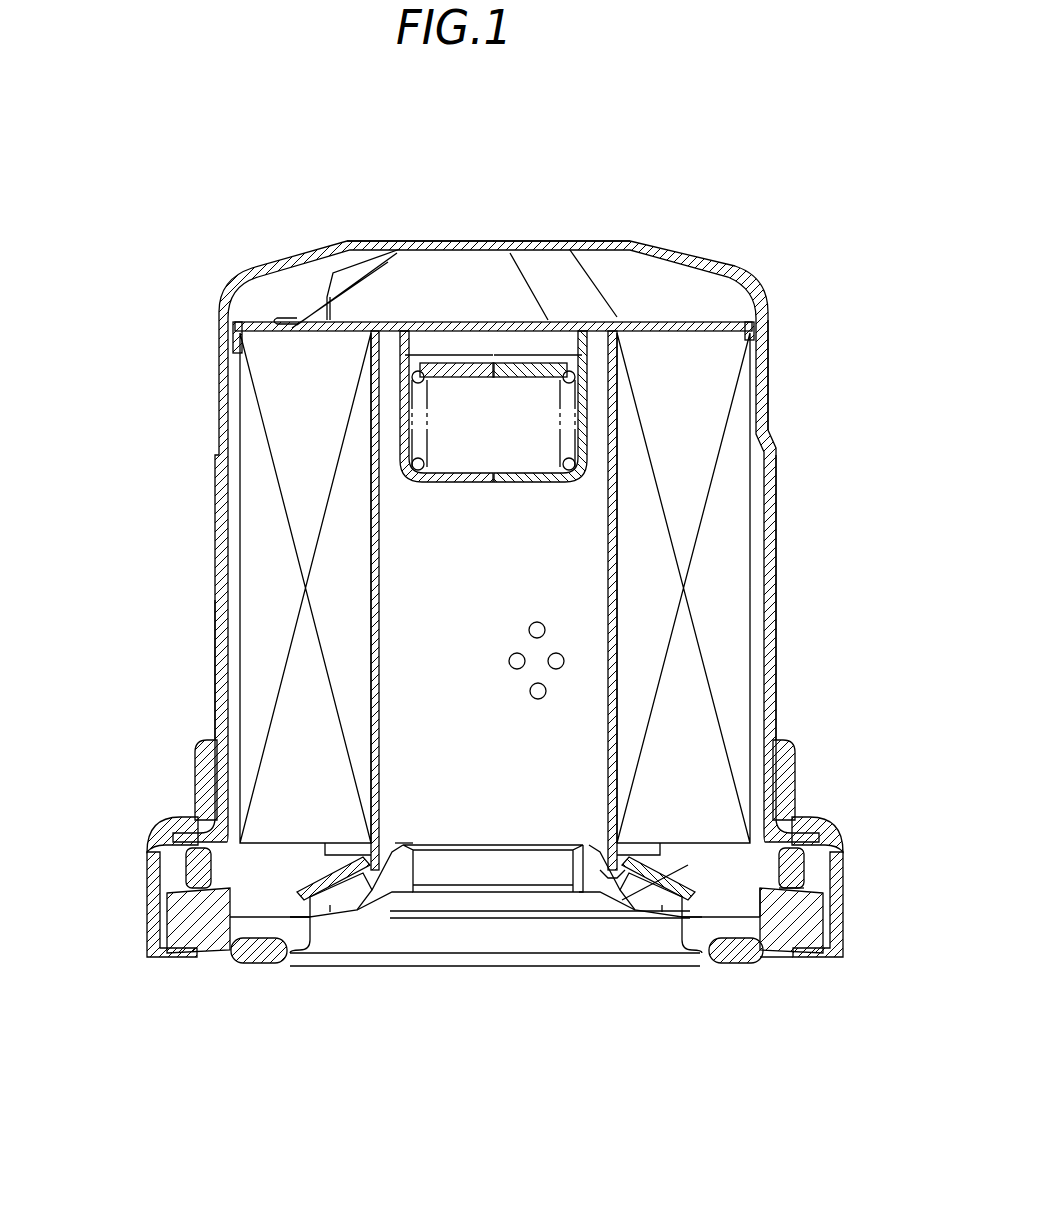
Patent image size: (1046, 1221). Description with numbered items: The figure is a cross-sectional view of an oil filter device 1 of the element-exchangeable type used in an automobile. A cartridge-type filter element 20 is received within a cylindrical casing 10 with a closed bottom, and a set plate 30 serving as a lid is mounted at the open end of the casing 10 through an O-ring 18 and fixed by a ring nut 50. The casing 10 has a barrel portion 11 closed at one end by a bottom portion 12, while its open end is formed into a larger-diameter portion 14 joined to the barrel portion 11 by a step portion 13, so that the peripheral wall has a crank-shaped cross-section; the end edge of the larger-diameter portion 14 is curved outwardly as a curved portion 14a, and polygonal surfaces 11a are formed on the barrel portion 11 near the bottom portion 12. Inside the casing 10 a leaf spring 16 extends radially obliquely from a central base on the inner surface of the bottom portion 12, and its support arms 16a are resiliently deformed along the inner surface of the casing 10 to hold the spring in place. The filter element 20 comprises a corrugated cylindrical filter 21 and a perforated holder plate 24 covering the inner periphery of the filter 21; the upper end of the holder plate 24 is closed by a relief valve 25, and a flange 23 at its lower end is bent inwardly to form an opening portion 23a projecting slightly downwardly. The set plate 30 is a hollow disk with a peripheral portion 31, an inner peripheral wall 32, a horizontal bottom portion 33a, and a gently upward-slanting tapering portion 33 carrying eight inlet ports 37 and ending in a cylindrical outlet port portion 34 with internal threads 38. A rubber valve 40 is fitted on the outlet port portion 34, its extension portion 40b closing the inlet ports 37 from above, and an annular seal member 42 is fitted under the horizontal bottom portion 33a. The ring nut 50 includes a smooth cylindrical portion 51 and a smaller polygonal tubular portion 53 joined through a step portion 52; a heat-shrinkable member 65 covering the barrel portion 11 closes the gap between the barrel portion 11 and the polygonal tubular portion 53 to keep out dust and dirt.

The oil filter device 1 is at (406, 207).
The casing 10 is at (213, 478).
The barrel portion 11 is at (777, 498).
The polygonal surfaces 11a is at (769, 353).
The bottom portion 12 is at (557, 241).
The step portion 13 is at (800, 817).
The larger-diameter portion 14 is at (807, 860).
The curved portion 14a is at (820, 885).
The leaf spring 16 is at (594, 292).
The support arms 16a is at (399, 290).
The O-ring 18 is at (185, 858).
The filter element 20 is at (232, 583).
The cylindrical filter 21 is at (720, 604).
The flange 23 is at (343, 853).
The opening portion 23a is at (607, 858).
The holder plate 24 is at (378, 690).
The relief valve 25 is at (496, 385).
The set plate 30 is at (531, 980).
The peripheral portion 31 is at (795, 958).
The inner peripheral wall 32 is at (760, 862).
The tapering portion 33 is at (340, 912).
The horizontal bottom portion 33a is at (730, 940).
The outlet port portion 34 is at (403, 835).
The inlet ports 37 is at (334, 918).
The internal threads 38 is at (440, 868).
The valve 40 is at (669, 850).
The extension portion 40b is at (693, 890).
The annular seal member 42 is at (272, 960).
The ring nut 50 is at (851, 921).
The cylindrical portion 51 is at (148, 920).
The step portion 52 is at (173, 817).
The polygonal tubular portion 53 is at (197, 762).
The heat-shrinkable member 65 is at (215, 676).